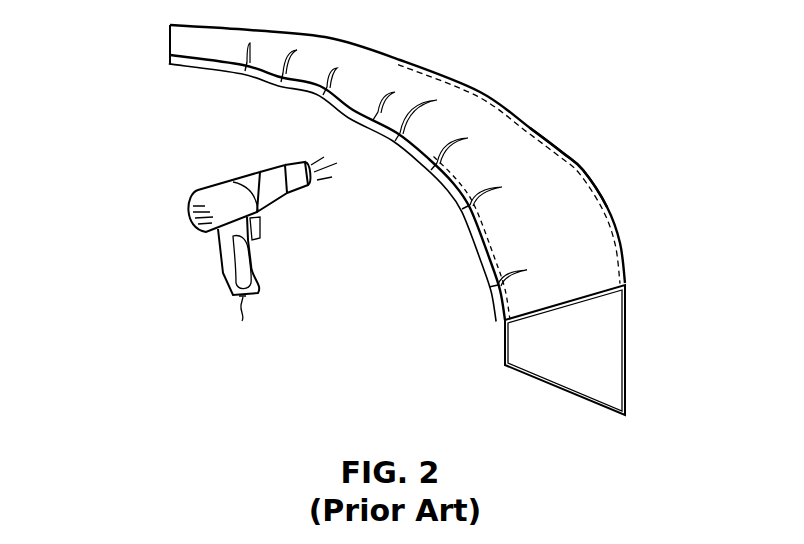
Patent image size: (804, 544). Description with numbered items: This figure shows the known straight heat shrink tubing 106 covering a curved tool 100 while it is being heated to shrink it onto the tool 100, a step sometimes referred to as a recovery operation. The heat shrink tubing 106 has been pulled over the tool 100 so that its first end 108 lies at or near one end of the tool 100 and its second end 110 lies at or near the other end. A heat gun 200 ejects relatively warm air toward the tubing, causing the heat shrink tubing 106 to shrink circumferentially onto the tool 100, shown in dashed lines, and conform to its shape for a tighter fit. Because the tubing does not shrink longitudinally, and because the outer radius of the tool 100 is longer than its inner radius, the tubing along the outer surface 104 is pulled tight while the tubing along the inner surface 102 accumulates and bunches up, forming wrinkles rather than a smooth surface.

The tool 100 is at (533, 153).
The inner surface 102 is at (325, 104).
The outer surface 104 is at (487, 97).
The heat shrink tubing 106 is at (577, 163).
The first end 108 is at (627, 335).
The second end 110 is at (170, 40).
The heat gun 200 is at (190, 207).